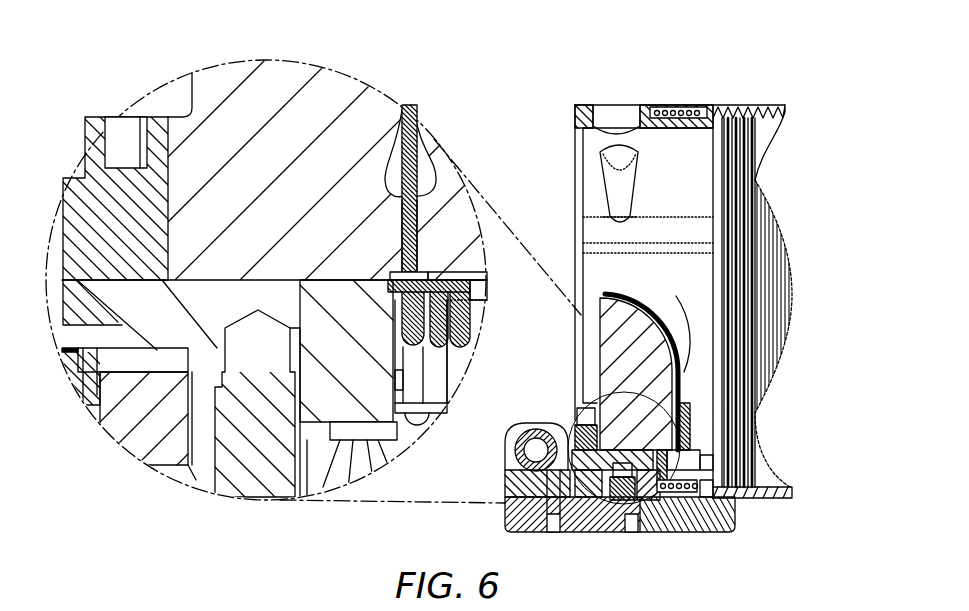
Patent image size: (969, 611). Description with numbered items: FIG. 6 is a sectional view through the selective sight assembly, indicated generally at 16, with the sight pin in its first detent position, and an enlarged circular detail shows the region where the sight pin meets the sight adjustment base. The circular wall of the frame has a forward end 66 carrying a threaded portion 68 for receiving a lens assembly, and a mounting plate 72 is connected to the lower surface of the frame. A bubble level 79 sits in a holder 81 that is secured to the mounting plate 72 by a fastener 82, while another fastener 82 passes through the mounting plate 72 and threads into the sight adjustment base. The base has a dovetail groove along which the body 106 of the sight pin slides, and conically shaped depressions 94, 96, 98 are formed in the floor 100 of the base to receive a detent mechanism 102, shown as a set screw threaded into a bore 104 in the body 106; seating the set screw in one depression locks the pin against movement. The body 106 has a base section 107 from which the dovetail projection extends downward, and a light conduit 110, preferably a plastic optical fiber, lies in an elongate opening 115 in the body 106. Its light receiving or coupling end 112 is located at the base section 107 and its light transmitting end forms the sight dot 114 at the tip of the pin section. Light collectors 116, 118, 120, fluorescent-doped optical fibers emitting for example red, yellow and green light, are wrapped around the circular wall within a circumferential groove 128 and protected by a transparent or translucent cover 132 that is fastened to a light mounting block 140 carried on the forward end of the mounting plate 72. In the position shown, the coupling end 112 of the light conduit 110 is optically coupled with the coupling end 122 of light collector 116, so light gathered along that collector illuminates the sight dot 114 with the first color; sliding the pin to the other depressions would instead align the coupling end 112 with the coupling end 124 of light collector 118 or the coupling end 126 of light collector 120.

The fuel module assembly 16 is at (740, 76).
The forward end 66 is at (786, 104).
The threaded portion 68 is at (745, 167).
The mounting plate 72 is at (505, 512).
The bubble level 79 is at (566, 424).
The holder 81 is at (505, 486).
The fastener 82 is at (555, 530).
The depression 94 is at (143, 283).
The depression 96 is at (190, 283).
The depression 98 is at (240, 285).
The floor 100 is at (268, 280).
The detent mechanism 102 is at (105, 186).
The bore 104 is at (173, 183).
The body 106 is at (330, 103).
The base section 107 is at (700, 452).
The light conduit 110 is at (417, 142).
The light receiving or coupling end 112 is at (403, 243).
The sight point or dot 114 is at (600, 298).
The elongate opening 115 is at (700, 388).
The light collector 116 is at (416, 405).
The light collector 118 is at (437, 378).
The light collector 120 is at (460, 352).
The coupling end 122 is at (400, 282).
The coupling end 124 is at (440, 284).
The coupling end 126 is at (466, 272).
The circumferential groove 128 is at (684, 110).
The cover 132 is at (665, 106).
The light mounting block 140 is at (713, 524).